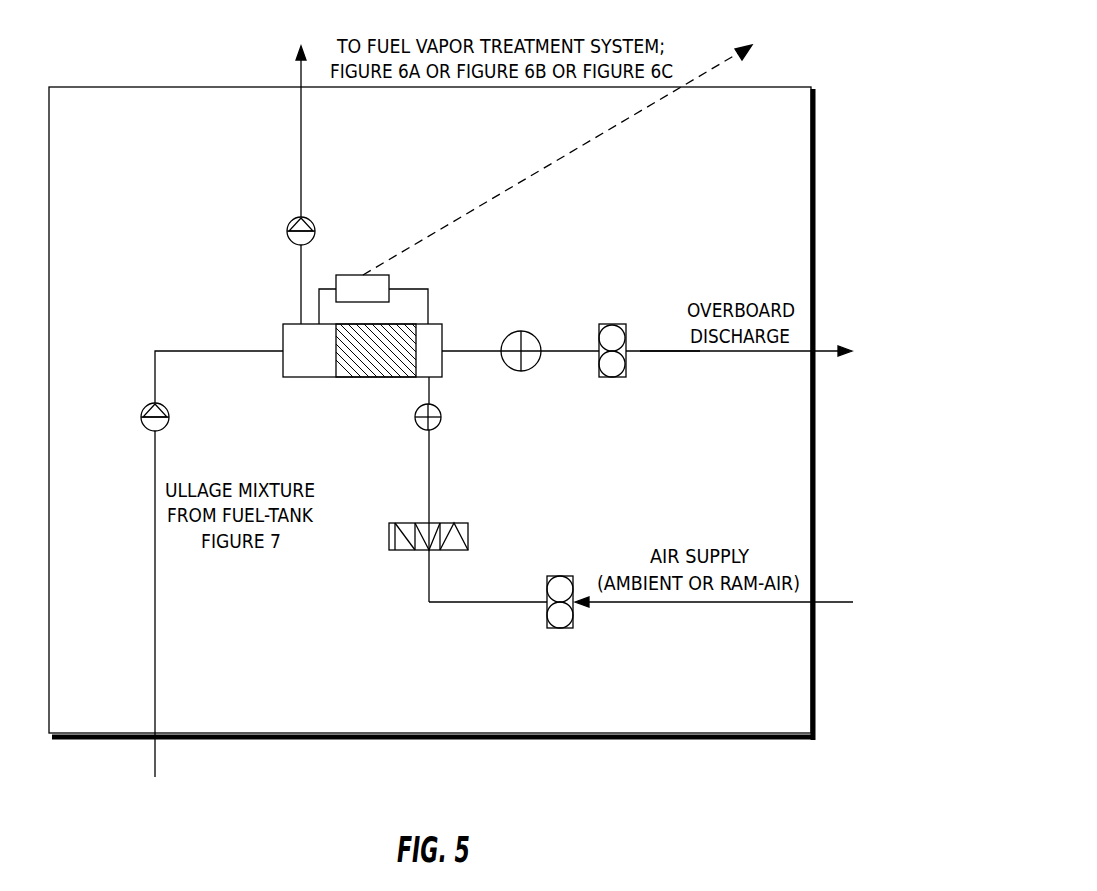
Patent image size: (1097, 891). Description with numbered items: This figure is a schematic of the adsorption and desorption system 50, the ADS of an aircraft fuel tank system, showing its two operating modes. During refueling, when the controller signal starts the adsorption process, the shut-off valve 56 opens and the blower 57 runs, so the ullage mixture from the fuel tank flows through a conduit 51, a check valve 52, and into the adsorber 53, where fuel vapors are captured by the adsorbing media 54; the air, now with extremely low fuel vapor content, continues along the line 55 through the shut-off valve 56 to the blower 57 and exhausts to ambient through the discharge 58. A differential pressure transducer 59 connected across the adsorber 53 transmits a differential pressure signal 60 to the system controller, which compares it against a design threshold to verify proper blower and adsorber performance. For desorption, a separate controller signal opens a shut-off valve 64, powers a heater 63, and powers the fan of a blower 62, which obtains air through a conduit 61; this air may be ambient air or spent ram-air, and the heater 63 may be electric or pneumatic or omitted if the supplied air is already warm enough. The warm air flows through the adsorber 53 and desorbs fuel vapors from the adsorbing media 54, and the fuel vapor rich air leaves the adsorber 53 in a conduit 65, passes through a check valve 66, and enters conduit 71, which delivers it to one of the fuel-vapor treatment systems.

The adsorption and desorption system 50 is at (188, 87).
The conduit 51 is at (155, 470).
The check valve 52 is at (141, 417).
The adsorber 53 is at (310, 377).
The adsorbing media 54 is at (378, 377).
The overboard discharge line 55 is at (463, 347).
The shut-off valve 56 is at (518, 330).
The blower 57 is at (610, 380).
The discharge 58 is at (651, 325).
The differential pressure transducer 59 is at (350, 275).
The differential pressure signal 60 is at (725, 58).
The conduit 61 is at (640, 602).
The blower 62 is at (560, 628).
The heater 63 is at (389, 538).
The shut-off valve 64 is at (441, 417).
The conduit 65 is at (301, 283).
The check valve 66 is at (287, 231).
The conduit 71 is at (301, 152).